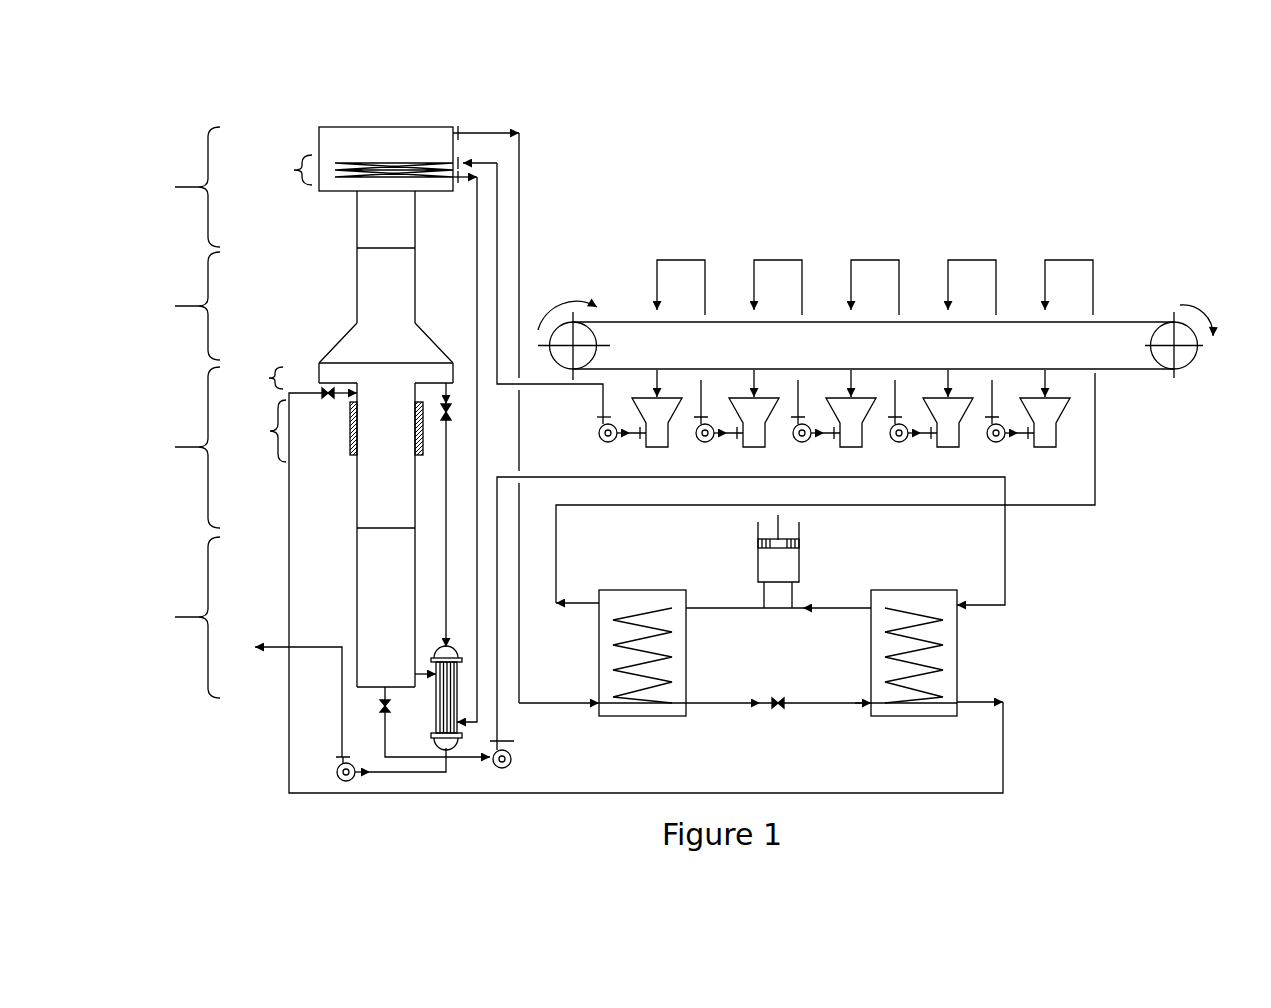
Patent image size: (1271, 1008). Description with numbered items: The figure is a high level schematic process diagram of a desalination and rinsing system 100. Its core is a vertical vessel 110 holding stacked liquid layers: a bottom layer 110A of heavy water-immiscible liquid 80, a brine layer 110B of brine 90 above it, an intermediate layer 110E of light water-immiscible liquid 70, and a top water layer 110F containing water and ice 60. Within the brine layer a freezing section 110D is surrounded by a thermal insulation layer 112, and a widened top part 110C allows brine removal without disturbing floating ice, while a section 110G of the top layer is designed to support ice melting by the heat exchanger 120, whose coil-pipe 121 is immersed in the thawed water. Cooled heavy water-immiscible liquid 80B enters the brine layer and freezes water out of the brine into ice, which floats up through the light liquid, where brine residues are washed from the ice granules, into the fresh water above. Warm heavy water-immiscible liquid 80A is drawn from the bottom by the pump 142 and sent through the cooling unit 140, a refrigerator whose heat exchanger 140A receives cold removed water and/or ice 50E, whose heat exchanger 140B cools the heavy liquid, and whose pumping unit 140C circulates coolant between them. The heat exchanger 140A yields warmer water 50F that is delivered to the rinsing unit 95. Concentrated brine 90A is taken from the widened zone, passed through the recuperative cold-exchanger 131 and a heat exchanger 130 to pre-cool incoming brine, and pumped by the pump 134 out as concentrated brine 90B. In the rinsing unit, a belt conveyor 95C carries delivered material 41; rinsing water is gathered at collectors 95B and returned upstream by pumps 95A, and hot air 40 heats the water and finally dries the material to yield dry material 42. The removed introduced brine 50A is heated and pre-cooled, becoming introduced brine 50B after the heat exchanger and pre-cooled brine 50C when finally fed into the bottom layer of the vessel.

The desalination and rinsing system 100 is at (713, 133).
The vertical vessel 110 is at (319, 135).
The water and ice 60 is at (342, 137).
The coil-pipe 121 is at (400, 162).
The melting section 110G is at (277, 170).
The top water layer 110F is at (175, 187).
The intermediate layer 110E is at (175, 306).
The brine layer 110B is at (175, 447).
The bottom layer 110A is at (175, 617).
The top part of brine layer 110C is at (250, 377).
The freezing section 110D is at (249, 431).
The light water-immiscible liquid 70 is at (375, 285).
The brine 90 is at (375, 499).
The heavy water-immiscible liquid 80 is at (375, 552).
The thermal insulation layer 112 is at (350, 430).
The concentrated brine 90A is at (446, 452).
The concentrated brine 90B is at (280, 652).
The pump 134 is at (336, 763).
The recuperative cold-exchanger 131 is at (436, 727).
The pump 142 is at (512, 756).
The heat exchanger 130 is at (457, 752).
The pre-cooled brine 50C is at (428, 665).
The introduced brine 50B is at (476, 218).
The introduced brine 50A is at (497, 213).
The removed water and/or ice 50E is at (490, 132).
The warmer water 50F is at (557, 560).
The heavy water-immiscible liquid 80A is at (1005, 533).
The cooled heavy water-immiscible liquid 80B is at (1003, 737).
The heat exchanger 120 is at (540, 159).
The cooling unit 140 is at (1060, 643).
The heat exchanger 140A is at (686, 620).
The heat exchanger 140B is at (871, 660).
The pumping unit 140C is at (800, 552).
The rinsing unit 95 is at (1068, 213).
The pumps 95A is at (603, 442).
The collectors 95B is at (658, 449).
The belt conveyor 95C is at (636, 322).
The delivered material 41 is at (570, 298).
The dry material 42 is at (1203, 306).
The hot air 40 is at (1140, 312).